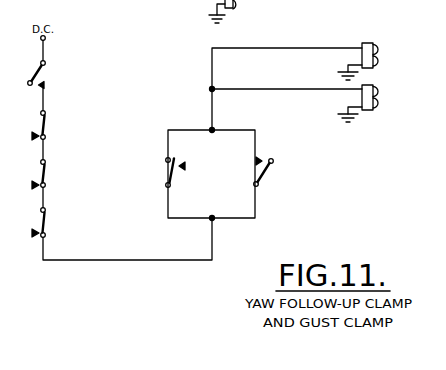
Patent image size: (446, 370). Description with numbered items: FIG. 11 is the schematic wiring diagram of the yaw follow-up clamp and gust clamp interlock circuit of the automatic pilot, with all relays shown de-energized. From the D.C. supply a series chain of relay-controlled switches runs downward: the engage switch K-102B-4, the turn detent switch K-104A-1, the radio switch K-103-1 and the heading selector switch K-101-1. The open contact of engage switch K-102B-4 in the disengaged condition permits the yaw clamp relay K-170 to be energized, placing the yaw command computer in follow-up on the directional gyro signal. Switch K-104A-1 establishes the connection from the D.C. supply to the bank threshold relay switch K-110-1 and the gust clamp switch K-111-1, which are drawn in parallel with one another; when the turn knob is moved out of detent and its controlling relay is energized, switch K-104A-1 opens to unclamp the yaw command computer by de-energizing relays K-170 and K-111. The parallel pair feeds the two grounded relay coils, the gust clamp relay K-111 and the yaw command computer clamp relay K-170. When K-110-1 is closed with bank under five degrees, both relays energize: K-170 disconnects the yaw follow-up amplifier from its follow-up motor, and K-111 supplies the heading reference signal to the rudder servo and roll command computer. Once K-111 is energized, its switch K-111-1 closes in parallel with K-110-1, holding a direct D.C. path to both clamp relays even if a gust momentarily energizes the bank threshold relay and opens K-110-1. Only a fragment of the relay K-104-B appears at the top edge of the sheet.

The engage switch K-102B-4 is at (70, 75).
The switch of relay K-104A K-104A-1 is at (71, 126).
The radio relay switch K-103-1 is at (71, 174).
The heading selector relay switch K-101-1 is at (75, 223).
The bank threshold relay switch K-110-1 is at (210, 174).
The gust clamp switch K-111-1 is at (290, 171).
The gust clamp relay K-111 is at (382, 59).
The yaw clamp relay K-170 is at (382, 99).
The relay K-104B K-104-B is at (203, 11).